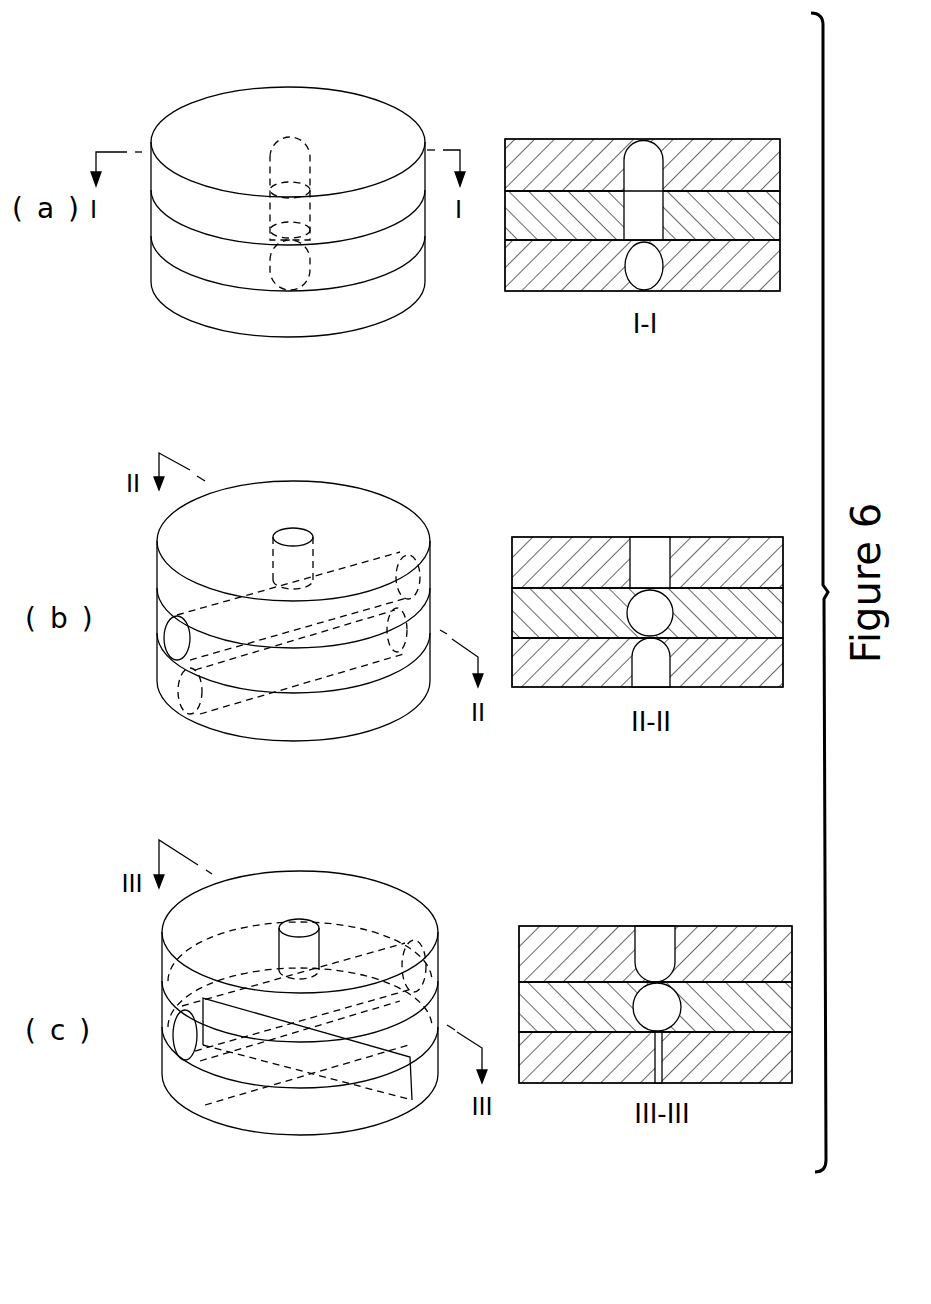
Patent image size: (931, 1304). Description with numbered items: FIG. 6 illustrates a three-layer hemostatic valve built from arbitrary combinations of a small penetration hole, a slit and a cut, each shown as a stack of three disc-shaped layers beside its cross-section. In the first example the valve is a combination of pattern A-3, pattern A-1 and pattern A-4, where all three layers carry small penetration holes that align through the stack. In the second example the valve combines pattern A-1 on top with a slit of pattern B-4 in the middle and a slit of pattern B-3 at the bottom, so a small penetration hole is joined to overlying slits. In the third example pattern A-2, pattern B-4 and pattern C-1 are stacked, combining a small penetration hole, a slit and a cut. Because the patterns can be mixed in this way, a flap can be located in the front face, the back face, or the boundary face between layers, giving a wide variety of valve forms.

The pattern A-3 is at (612, 139).
The pattern A-1 is at (523, 207).
The pattern A-4 is at (520, 285).
The pattern B-4 is at (560, 602).
The pattern B-3 is at (557, 683).
The pattern A-2 is at (617, 945).
The pattern C-1 is at (540, 1082).